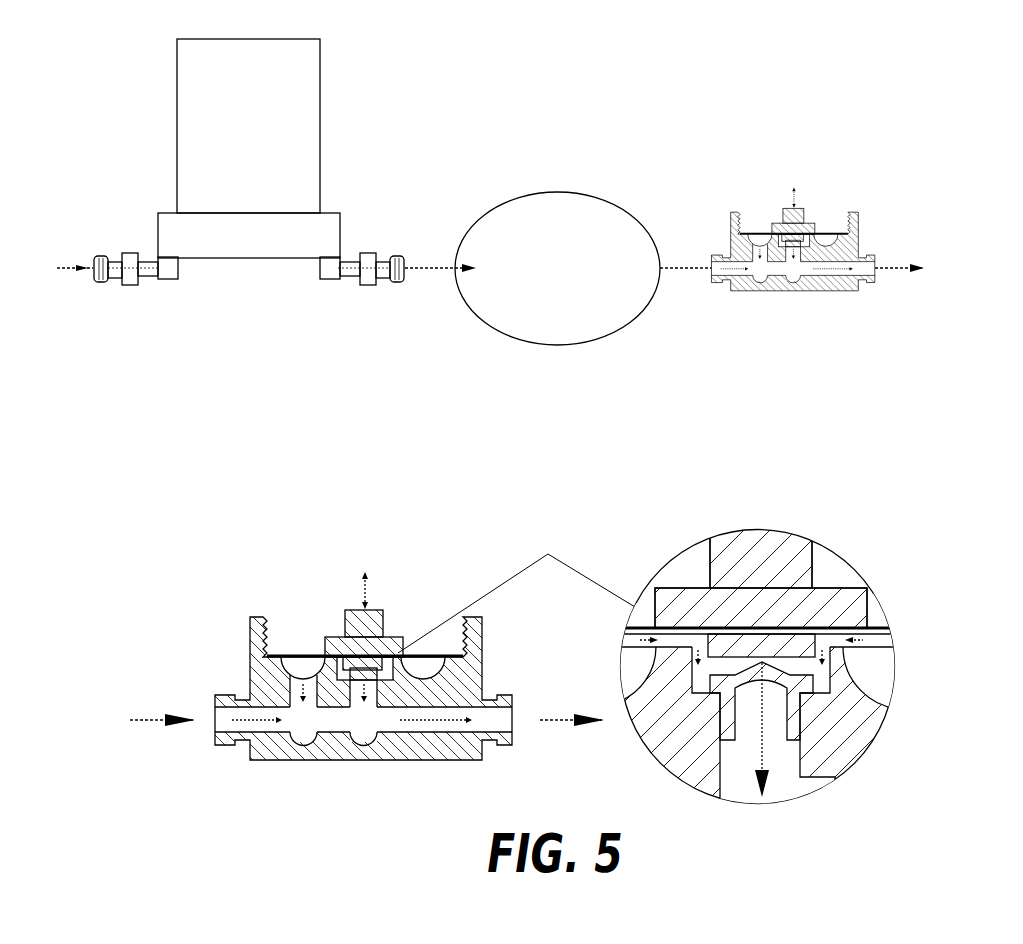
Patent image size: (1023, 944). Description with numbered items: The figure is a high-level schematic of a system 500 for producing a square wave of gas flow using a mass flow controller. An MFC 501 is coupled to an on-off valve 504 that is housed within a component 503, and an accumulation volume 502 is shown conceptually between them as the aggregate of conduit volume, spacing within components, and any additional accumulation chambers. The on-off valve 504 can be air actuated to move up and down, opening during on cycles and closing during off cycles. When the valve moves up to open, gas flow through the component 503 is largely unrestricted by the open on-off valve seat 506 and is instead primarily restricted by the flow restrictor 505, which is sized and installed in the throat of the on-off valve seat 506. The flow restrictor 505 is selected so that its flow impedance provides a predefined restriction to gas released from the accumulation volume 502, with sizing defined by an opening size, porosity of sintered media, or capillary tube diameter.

The system 500 is at (727, 71).
The MFC 501 is at (243, 136).
The accumulation volume 502 is at (537, 243).
The component 503 is at (344, 786).
The on-off valve 504 is at (761, 574).
The flow restrictor 505 is at (761, 701).
The on-off valve seat 506 is at (760, 642).